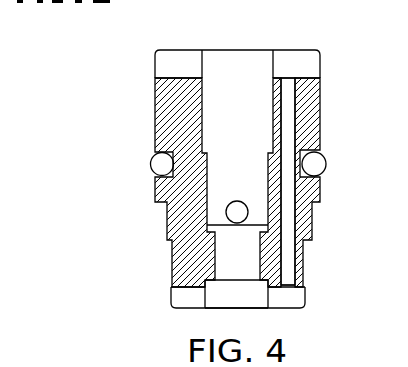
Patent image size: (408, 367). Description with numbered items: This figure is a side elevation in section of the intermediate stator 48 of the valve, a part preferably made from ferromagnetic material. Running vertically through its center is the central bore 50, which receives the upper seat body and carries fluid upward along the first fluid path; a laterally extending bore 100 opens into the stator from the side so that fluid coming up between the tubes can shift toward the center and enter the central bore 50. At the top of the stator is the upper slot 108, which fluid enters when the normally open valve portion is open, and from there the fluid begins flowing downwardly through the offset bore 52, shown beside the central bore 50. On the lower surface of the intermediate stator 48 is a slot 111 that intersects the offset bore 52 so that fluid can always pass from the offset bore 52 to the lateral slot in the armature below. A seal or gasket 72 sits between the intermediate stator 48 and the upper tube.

The intermediate stator 48 is at (136, 113).
The central bore 50 is at (277, 88).
The offset bore 52 is at (326, 182).
The seal or gasket 72 is at (152, 167).
The laterally extending bore 100 is at (237, 201).
The upper slot 108 is at (176, 78).
The slot 111 is at (278, 289).